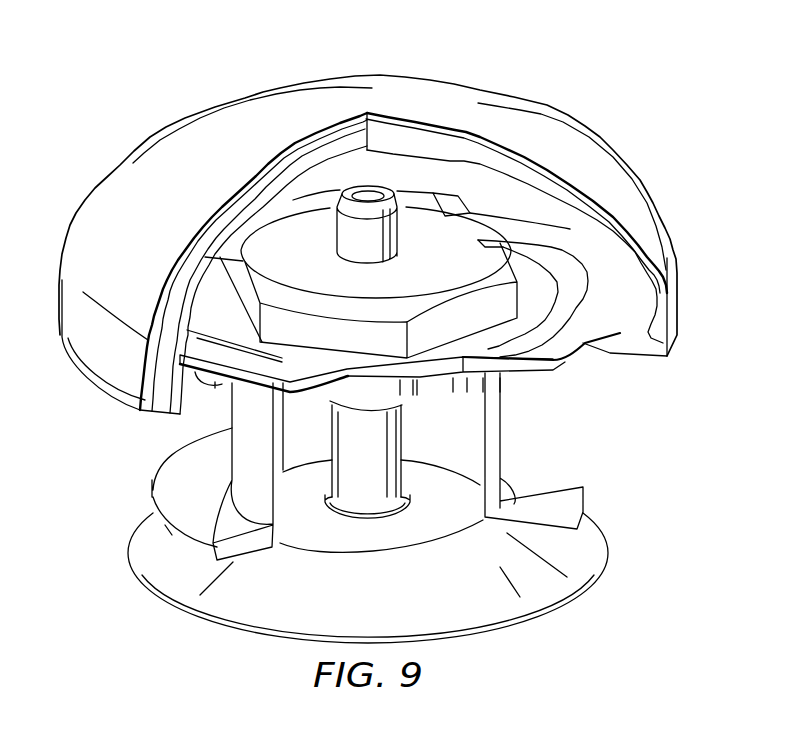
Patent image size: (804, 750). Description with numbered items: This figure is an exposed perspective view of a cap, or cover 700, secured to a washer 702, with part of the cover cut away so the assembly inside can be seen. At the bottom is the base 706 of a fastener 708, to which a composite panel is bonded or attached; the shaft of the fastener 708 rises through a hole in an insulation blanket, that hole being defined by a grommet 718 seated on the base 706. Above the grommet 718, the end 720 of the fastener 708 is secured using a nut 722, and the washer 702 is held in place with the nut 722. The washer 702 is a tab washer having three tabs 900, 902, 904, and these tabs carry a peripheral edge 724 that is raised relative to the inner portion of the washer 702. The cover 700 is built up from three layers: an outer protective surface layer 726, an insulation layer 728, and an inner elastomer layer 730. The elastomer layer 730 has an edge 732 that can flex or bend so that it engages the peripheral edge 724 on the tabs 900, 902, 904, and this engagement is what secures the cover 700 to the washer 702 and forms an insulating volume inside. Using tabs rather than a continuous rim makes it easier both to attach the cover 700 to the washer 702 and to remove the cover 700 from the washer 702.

The cover 700 is at (622, 164).
The washer 702 is at (413, 368).
The base 706 is at (607, 553).
The fastener 708 is at (372, 192).
The grommet 718 is at (586, 494).
The end 720 is at (345, 145).
The nut 722 is at (472, 242).
The peripheral edge 724 is at (586, 346).
The protective surface layer 726 is at (169, 298).
The insulation layer 728 is at (213, 246).
The elastomer layer 730 is at (262, 212).
The edge 732 is at (183, 390).
The tab 900 is at (280, 373).
The tab 902 is at (607, 282).
The tab 904 is at (437, 196).